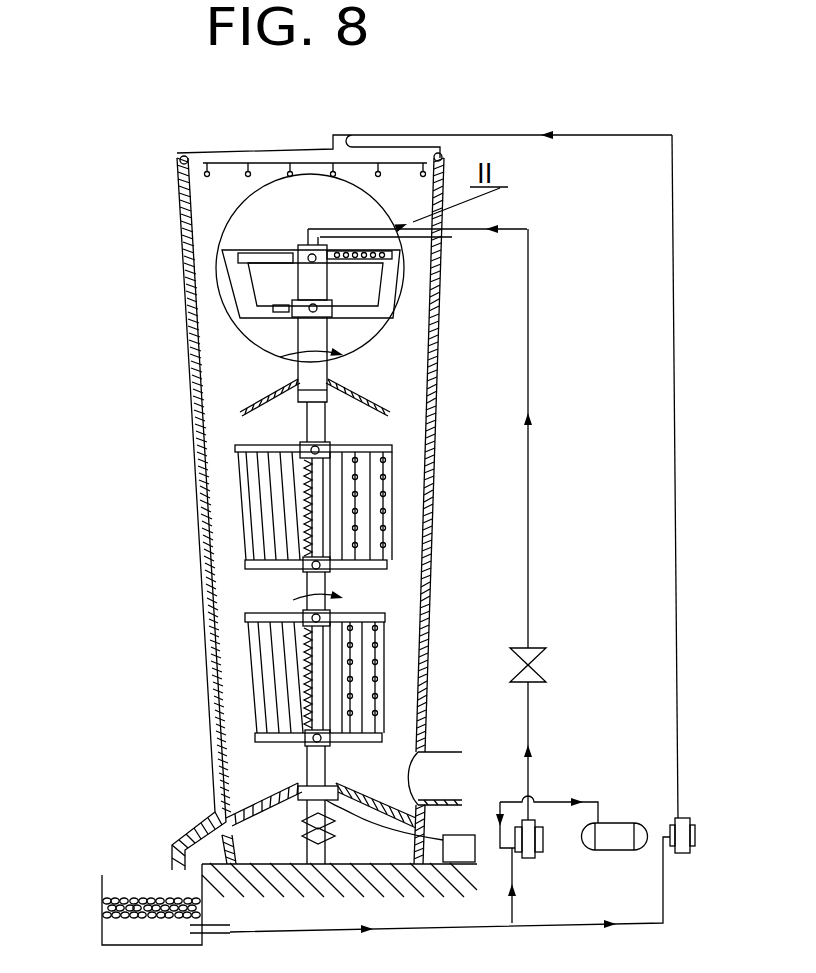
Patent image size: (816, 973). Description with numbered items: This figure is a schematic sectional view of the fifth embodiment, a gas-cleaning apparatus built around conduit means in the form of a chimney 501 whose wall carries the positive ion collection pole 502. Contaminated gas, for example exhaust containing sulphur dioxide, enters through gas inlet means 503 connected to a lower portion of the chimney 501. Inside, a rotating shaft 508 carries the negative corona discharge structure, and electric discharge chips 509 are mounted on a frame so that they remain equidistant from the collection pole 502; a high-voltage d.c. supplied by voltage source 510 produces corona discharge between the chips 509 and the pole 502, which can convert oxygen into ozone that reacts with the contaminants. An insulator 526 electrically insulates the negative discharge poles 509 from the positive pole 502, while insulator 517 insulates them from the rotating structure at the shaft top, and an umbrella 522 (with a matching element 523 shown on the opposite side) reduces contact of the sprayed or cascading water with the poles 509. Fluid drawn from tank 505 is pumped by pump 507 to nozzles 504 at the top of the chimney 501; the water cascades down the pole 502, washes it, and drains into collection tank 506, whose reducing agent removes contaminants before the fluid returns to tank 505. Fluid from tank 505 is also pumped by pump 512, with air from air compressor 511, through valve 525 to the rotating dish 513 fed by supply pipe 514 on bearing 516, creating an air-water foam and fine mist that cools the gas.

The conduit means 501 is at (441, 357).
The positive ion collection pole 502 is at (430, 413).
The gas inlet means 503 is at (440, 765).
The nozzles 504 is at (206, 180).
The tank 505 is at (118, 932).
The collection tank 506 is at (103, 897).
The pump 507 is at (694, 835).
The rotating shaft 508 is at (310, 432).
The electric discharge chips 509 is at (303, 523).
The voltage source 510 is at (458, 838).
The air compressor 511 is at (612, 842).
The pump 512 is at (536, 848).
The rotary dish 513 is at (368, 246).
The supply pipe 514 is at (410, 238).
The bearing 516 is at (318, 292).
The insulator 517 is at (326, 404).
The umbrella 522 is at (356, 385).
The baffle 523 is at (287, 383).
The valve 525 is at (548, 665).
The insulator 526 is at (305, 837).